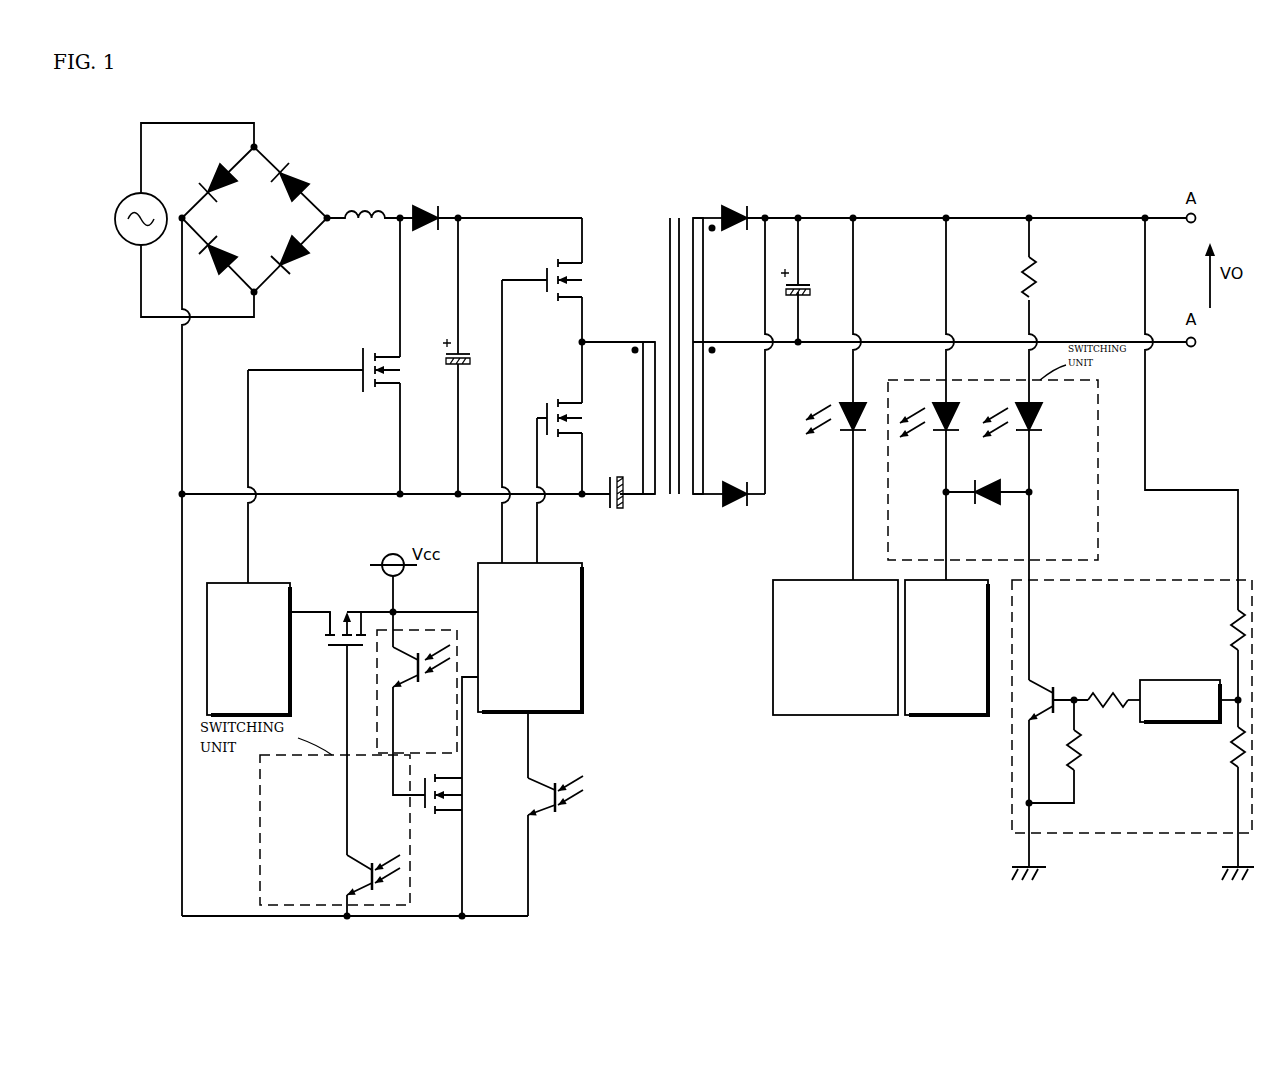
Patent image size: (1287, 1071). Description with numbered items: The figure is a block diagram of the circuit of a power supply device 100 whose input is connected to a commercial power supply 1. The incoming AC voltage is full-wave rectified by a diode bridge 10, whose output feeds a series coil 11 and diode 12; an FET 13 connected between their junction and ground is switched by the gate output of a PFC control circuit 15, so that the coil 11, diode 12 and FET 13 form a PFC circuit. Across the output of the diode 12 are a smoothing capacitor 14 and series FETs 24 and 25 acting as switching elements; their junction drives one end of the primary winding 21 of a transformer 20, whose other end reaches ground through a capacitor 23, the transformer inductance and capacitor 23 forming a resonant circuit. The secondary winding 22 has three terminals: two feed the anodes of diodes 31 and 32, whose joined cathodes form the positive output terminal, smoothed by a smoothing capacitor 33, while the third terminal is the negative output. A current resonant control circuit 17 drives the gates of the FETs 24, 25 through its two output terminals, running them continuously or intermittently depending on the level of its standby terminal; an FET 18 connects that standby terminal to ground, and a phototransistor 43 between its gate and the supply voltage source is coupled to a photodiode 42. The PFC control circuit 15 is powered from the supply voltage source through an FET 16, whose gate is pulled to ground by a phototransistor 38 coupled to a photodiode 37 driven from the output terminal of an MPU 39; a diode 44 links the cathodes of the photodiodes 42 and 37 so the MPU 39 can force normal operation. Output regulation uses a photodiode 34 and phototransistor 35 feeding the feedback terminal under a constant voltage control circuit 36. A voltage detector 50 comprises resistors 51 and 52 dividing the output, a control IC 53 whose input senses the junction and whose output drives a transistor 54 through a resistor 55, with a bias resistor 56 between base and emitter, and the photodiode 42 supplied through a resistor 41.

The commercial power supply 1 is at (128, 190).
The diode bridge 10 is at (273, 152).
The coil 11 is at (366, 210).
The diode 12 is at (426, 207).
The FET 13 is at (372, 347).
The smoothing capacitor 14 is at (467, 352).
The PFC control circuit 15 is at (273, 583).
The FET 16 is at (338, 655).
The current resonant control circuit 17 is at (588, 630).
The FET 18 is at (467, 783).
The transformer 20 is at (670, 212).
The primary winding 21 is at (647, 330).
The secondary winding 22 is at (696, 212).
The capacitor 23 is at (615, 513).
The FET 24 is at (584, 270).
The FET 25 is at (551, 398).
The diode 31 is at (737, 204).
The diode 32 is at (735, 513).
The smoothing capacitor 33 is at (808, 284).
The photodiode 34 is at (845, 400).
The phototransistor 35 is at (563, 815).
The constant voltage control circuit 36 is at (855, 716).
The photodiode 37 is at (929, 448).
The phototransistor 38 is at (337, 872).
The MPU 39 is at (945, 716).
The resistor 41 is at (1041, 281).
The photodiode 42 is at (1023, 448).
The phototransistor 43 is at (412, 693).
The diode 44 is at (988, 510).
The voltage detector 50 is at (1128, 580).
The resistor 51 is at (1229, 614).
The resistor 52 is at (1228, 763).
The control IC 53 is at (1168, 680).
The transistor 54 is at (1045, 680).
The resistor 55 is at (1108, 690).
The bias resistor 56 is at (1085, 752).
The power supply device 100 is at (752, 848).